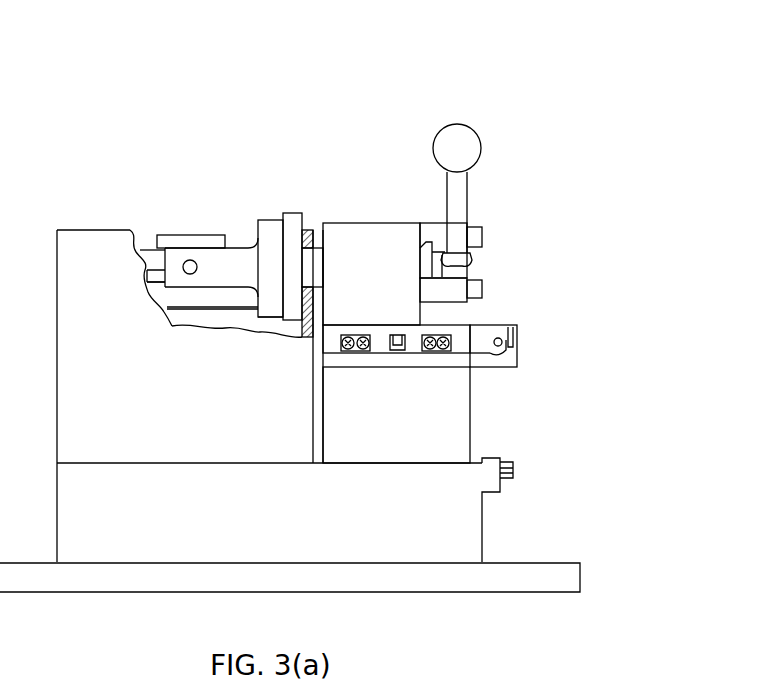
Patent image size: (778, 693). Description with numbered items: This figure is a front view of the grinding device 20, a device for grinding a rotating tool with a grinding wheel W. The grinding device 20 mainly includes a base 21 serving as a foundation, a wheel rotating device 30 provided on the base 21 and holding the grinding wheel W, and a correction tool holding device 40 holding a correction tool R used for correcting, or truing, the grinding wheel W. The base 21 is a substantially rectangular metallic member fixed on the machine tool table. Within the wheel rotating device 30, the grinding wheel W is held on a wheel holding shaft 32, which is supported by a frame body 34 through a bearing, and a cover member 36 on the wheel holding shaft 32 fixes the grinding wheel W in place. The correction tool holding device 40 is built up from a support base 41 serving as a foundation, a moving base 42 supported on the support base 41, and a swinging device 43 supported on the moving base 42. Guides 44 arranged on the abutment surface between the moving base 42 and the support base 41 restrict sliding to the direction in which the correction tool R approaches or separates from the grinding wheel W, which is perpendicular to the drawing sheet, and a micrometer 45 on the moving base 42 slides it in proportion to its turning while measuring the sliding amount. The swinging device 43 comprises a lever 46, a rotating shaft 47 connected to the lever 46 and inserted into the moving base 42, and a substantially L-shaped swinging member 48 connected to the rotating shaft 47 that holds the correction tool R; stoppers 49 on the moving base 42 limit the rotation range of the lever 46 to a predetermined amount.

The grinding device 20 is at (383, 108).
The base 21 is at (573, 578).
The wheel rotating device 30 is at (135, 187).
The wheel holding shaft 32 is at (183, 300).
The frame body 34 is at (227, 322).
The cover member 36 is at (187, 240).
The correction tool holding device 40 is at (537, 227).
The support base 41 is at (460, 437).
The moving base 42 is at (372, 230).
The swinging device 43 is at (398, 227).
The guides 44 is at (348, 352).
The micrometer 45 is at (515, 342).
The lever 46 is at (468, 142).
The rotating shaft 47 is at (315, 272).
The swinging member 48 is at (273, 225).
The stoppers 49 is at (433, 230).
The grinding wheel W is at (150, 277).
The correction tool R is at (197, 267).